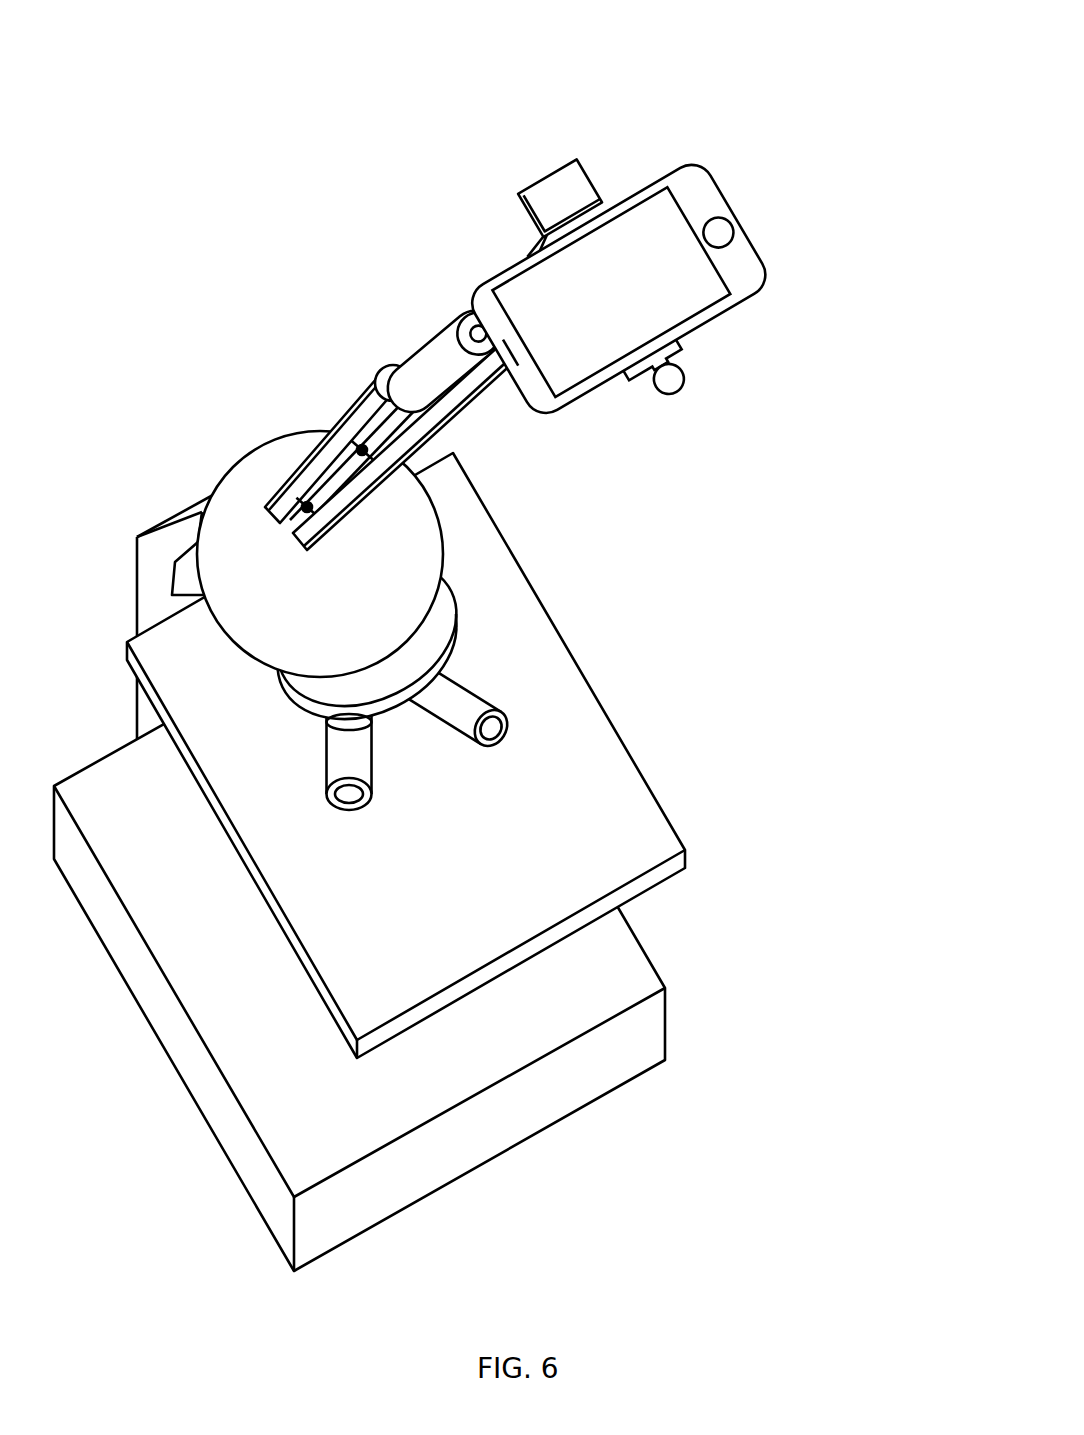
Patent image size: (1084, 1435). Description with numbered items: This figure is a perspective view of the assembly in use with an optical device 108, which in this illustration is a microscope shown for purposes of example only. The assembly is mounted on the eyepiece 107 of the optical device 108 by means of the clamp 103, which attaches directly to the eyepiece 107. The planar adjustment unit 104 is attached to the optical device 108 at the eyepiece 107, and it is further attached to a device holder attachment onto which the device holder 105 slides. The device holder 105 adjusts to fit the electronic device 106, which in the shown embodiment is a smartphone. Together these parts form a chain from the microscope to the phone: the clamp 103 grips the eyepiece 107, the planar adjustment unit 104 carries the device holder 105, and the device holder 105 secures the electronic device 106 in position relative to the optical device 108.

The clamp 103 is at (333, 372).
The planar adjustment unit 104 is at (517, 108).
The device holder 105 is at (697, 409).
The electronic device 106 is at (800, 270).
The eyepiece 107 is at (429, 301).
The optical device 108 is at (778, 813).